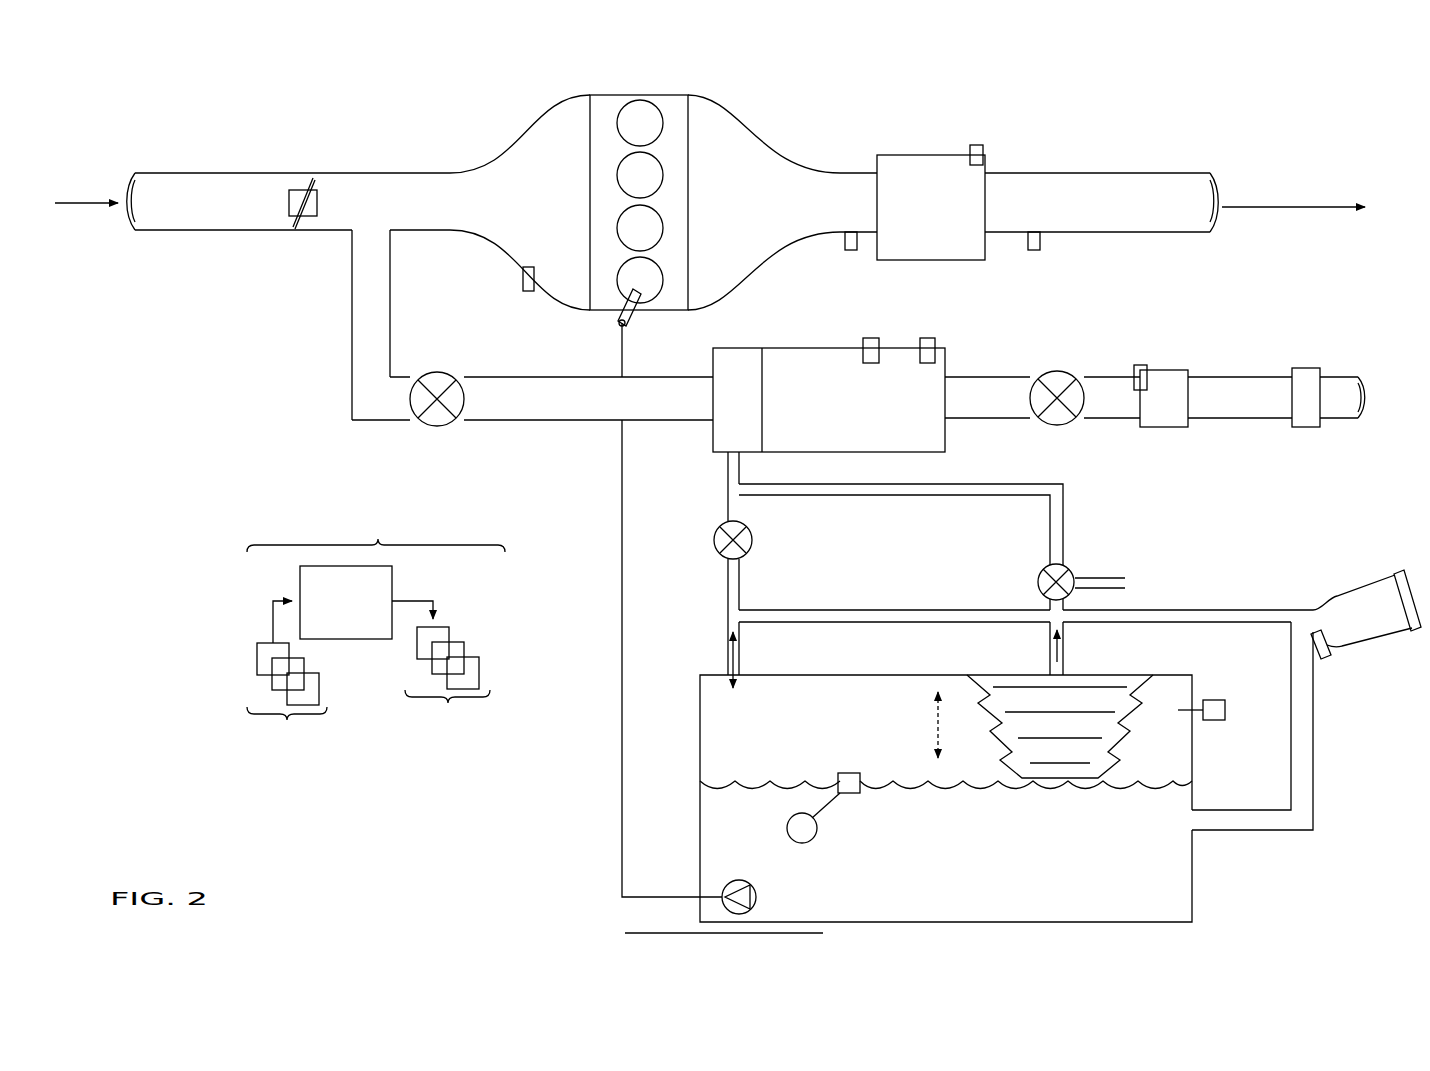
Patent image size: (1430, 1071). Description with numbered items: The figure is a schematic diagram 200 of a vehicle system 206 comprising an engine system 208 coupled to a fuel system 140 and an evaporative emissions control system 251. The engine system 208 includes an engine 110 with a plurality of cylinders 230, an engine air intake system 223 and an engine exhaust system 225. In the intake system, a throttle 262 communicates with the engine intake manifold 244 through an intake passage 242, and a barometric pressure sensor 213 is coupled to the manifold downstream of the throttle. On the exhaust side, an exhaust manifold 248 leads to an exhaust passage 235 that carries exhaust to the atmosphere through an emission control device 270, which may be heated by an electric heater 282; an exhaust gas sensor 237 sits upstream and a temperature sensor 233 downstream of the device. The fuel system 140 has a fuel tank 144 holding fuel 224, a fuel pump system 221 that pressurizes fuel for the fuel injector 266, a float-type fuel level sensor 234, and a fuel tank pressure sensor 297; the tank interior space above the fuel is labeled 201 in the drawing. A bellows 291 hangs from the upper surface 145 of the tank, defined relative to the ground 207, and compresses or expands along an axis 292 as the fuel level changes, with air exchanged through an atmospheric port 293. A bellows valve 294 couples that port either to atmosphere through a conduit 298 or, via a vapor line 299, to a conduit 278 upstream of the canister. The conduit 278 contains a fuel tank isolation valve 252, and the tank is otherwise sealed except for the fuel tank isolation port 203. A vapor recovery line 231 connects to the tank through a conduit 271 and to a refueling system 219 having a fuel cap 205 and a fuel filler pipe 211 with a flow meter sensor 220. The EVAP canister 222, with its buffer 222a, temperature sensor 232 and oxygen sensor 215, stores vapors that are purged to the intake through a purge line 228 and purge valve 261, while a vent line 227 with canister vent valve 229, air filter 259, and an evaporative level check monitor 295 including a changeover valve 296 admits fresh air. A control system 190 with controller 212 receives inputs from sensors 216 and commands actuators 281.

The schematic diagram 200 is at (1350, 88).
The vehicle system 206 is at (133, 115).
The engine air intake system 223 is at (513, 122).
The engine intake manifold 244 is at (548, 214).
The engine 110 is at (689, 185).
The cylinders 230 is at (662, 118).
The engine exhaust system 225 is at (777, 123).
The exhaust manifold 248 is at (778, 214).
The emission control device 270 is at (914, 156).
The engine system 208 is at (990, 103).
The electric heater 282 is at (977, 145).
The exhaust gas sensor 237 is at (847, 250).
The temperature sensor 233 is at (1030, 250).
The exhaust passage 235 is at (1160, 172).
The throttle 262 is at (316, 206).
The intake passage 242 is at (346, 234).
The barometric pressure sensor 213 is at (528, 288).
The fuel injector 266 is at (628, 320).
The purge line 228 is at (558, 411).
The purge valve 261 is at (438, 373).
The EVAP canister 222 is at (946, 370).
The buffer 222a is at (740, 348).
The temperature sensor 232 is at (868, 338).
The oxygen sensor 215 is at (927, 338).
The vent line 227 is at (990, 409).
The canister vent valve 229 is at (1060, 371).
The evaporative level check monitor 295 is at (1168, 370).
The changeover valve 296 is at (1141, 365).
The air filter 259 is at (1310, 368).
The evaporative emissions control system 251 is at (1298, 315).
The conduit 278 is at (728, 492).
The fuel tank isolation valve 252 is at (716, 556).
The fuel tank isolation port 203 is at (727, 640).
The conduit 271 is at (741, 640).
The vapor line 299 is at (952, 496).
The bellows valve 294 is at (1038, 578).
The conduit 298 is at (1095, 577).
The atmospheric port 293 is at (1049, 658).
The vapor recovery line 231 is at (1210, 608).
The fuel filler pipe 211 is at (1313, 748).
The fuel cap 205 is at (1400, 568).
The refueling system 219 is at (1368, 566).
The flow meter sensor 220 is at (1327, 657).
The fuel system 140 is at (1246, 882).
The upper surface 145 is at (836, 685).
The fuel tank 201 is at (753, 746).
The fuel 224 is at (1020, 873).
The fuel tank 144 is at (1194, 780).
The fuel level sensor 234 is at (852, 773).
The fuel pump system 221 is at (740, 881).
The ground 207 is at (668, 932).
The bellows 291 is at (1128, 720).
The axis 292 is at (936, 725).
The fuel tank pressure sensor 297 is at (1215, 700).
The control system 190 is at (376, 522).
The controller 212 is at (361, 611).
The sensors 216 is at (287, 684).
The actuators 281 is at (441, 676).